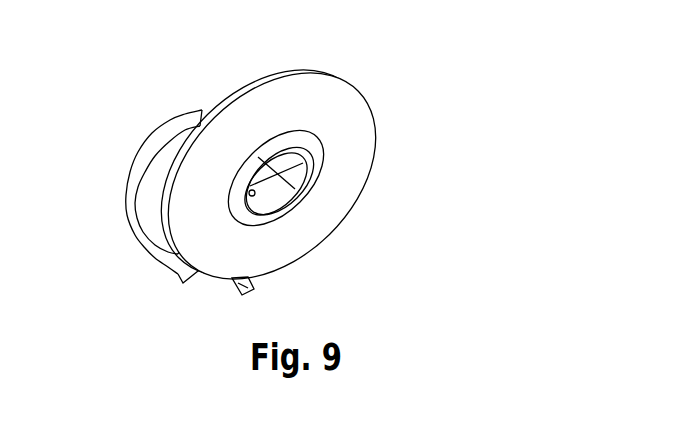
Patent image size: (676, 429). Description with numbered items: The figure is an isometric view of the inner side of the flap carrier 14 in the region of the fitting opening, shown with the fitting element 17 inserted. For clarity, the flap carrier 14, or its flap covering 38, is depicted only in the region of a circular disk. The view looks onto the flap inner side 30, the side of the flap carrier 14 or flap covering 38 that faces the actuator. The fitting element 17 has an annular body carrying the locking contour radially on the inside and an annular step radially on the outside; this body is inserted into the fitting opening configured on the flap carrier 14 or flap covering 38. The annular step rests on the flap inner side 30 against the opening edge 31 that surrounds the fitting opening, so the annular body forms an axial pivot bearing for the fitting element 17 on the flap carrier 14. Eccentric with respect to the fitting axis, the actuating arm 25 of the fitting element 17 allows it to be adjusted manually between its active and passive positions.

The flap carrier 14 is at (284, 175).
The fitting element 17 is at (286, 218).
The actuating arm 25 is at (237, 288).
The flap inner side 30 is at (349, 169).
The opening edge 31 is at (303, 152).
The flap covering 38 is at (363, 144).